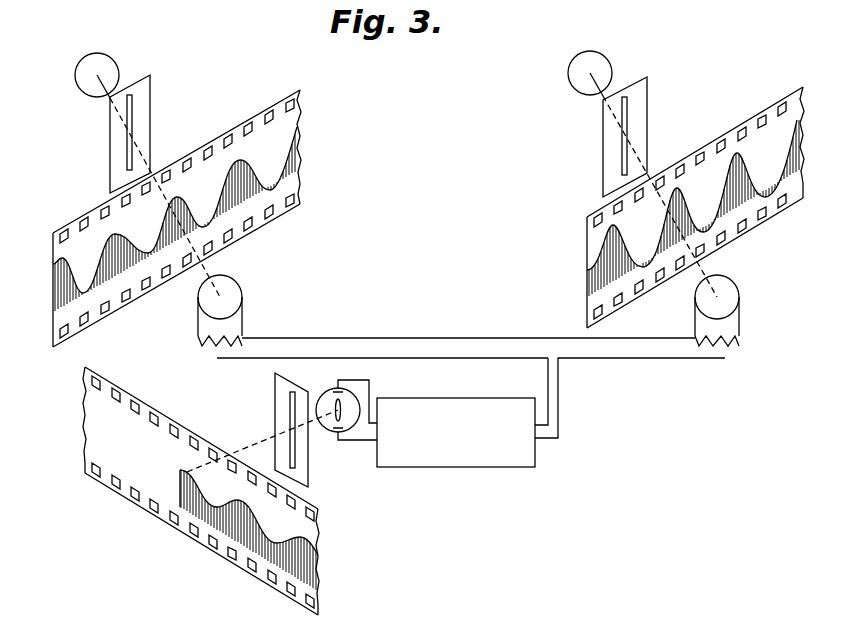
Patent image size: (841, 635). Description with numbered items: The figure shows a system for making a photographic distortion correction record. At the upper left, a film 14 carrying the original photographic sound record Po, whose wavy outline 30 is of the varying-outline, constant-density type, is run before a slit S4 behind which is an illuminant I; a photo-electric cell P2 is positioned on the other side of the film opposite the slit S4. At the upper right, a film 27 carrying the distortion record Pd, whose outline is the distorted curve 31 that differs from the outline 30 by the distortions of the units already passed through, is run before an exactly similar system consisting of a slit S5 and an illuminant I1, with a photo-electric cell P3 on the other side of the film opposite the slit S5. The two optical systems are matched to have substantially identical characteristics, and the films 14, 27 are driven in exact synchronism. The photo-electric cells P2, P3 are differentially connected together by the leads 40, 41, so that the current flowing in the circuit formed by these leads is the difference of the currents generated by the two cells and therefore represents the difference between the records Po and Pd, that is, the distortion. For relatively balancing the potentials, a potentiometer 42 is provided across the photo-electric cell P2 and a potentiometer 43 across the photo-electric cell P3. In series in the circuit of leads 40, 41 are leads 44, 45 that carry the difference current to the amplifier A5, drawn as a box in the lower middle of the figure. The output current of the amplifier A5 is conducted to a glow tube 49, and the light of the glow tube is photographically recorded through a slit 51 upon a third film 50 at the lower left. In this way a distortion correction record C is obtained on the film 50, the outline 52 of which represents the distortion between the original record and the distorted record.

The film 14 is at (276, 80).
The wavy outline 30 is at (98, 252).
The original photographic sound record Po is at (77, 305).
The illuminant I is at (107, 73).
The slit S4 is at (130, 128).
The photo-electric cell P2 is at (233, 292).
The potentiometer 42 is at (217, 357).
The lead 40 is at (448, 338).
The lead 41 is at (476, 358).
The lead 44 is at (548, 388).
The lead 45 is at (558, 388).
The amplifier A5 is at (488, 462).
The glow tube 49 is at (331, 428).
The slit 51 is at (290, 424).
The film 50 is at (104, 491).
The outline 52 is at (259, 521).
The distortion correction record C is at (302, 571).
The illuminant I1 is at (600, 66).
The slit S5 is at (623, 118).
The film 27 is at (770, 104).
The distorted curve 31 is at (597, 240).
The distortion record Pd is at (623, 275).
The photo-electric cell P3 is at (729, 289).
The potentiometer 43 is at (725, 357).